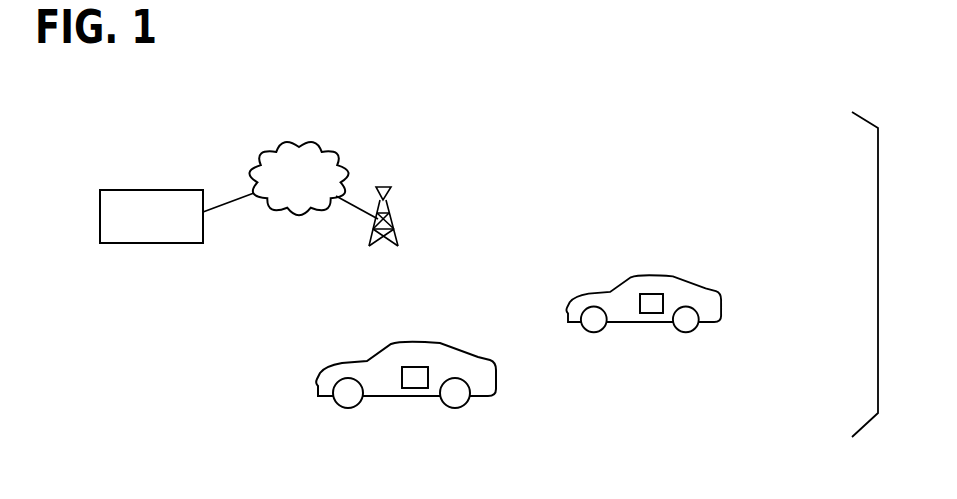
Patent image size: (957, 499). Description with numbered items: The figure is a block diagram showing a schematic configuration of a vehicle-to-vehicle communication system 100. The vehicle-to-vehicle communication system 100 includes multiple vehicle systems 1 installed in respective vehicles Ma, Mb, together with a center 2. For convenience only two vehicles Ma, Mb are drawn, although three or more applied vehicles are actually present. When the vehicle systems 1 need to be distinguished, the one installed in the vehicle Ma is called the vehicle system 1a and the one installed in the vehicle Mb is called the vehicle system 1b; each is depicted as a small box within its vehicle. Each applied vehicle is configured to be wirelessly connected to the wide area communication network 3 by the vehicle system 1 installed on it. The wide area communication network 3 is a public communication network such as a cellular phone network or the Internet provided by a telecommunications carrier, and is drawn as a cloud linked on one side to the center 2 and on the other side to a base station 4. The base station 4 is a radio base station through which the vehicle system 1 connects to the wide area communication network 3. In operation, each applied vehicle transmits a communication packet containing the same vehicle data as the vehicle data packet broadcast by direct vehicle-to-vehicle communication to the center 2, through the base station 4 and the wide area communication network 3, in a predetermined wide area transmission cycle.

The vehicle-to-vehicle communication system 100 is at (224, 137).
The center 2 is at (131, 190).
The wide area communication network 3 is at (320, 145).
The base station 4 is at (388, 212).
The vehicle system 1 is at (532, 341).
The vehicle system 1a is at (415, 389).
The vehicle system 1b is at (650, 313).
The vehicle Ma is at (467, 353).
The vehicle Mb is at (697, 287).